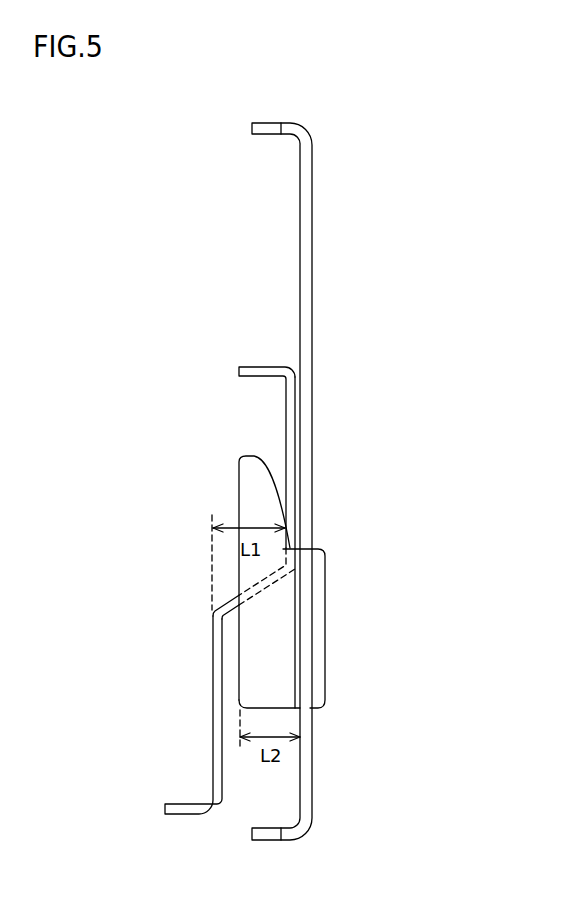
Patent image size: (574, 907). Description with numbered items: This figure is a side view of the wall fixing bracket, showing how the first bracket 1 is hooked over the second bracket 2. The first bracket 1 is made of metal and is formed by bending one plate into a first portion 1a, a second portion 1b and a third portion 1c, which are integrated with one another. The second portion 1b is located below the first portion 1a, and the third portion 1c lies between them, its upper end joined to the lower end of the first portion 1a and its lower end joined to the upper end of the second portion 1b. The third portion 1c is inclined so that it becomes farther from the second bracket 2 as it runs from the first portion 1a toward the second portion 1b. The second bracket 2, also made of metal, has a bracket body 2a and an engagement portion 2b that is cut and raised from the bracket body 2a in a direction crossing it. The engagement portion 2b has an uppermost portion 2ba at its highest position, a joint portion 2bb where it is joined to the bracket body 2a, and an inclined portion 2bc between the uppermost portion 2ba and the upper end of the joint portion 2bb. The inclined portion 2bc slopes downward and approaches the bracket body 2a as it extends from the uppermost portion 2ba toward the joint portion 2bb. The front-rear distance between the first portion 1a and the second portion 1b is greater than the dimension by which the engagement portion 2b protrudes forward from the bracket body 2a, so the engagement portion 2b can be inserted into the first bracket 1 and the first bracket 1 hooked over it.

The first bracket 1 is at (230, 552).
The first portion 1a is at (287, 402).
The second portion 1b is at (212, 703).
The third portion 1c is at (258, 603).
The second bracket 2 is at (322, 150).
The bracket body 2a is at (300, 262).
The engagement portion 2b is at (255, 497).
The uppermost portion 2ba is at (247, 457).
The joint portion 2bb is at (325, 630).
The inclined portion 2bc is at (276, 498).